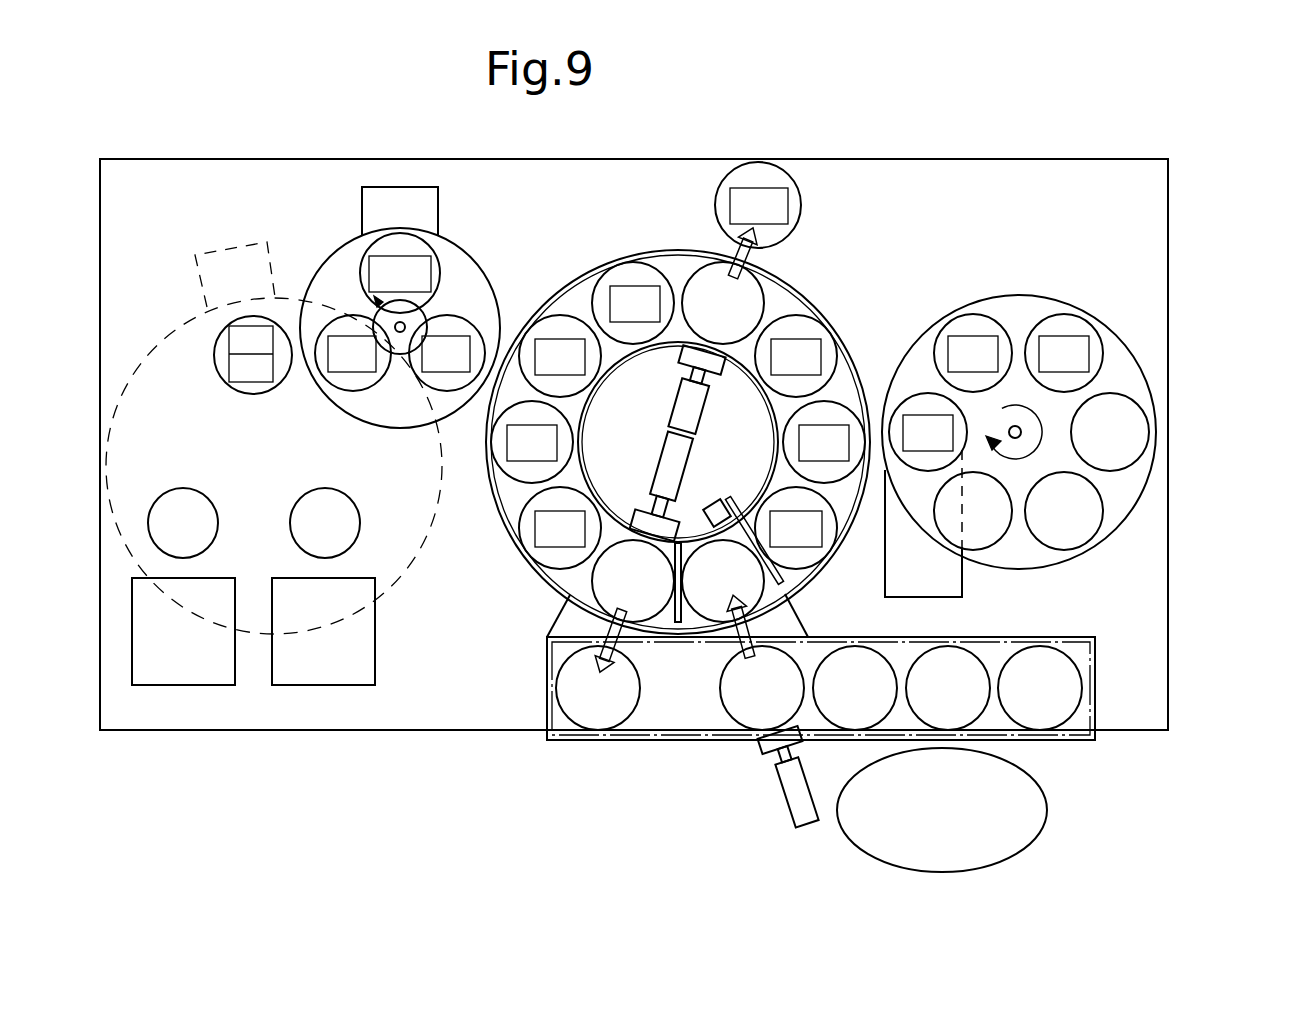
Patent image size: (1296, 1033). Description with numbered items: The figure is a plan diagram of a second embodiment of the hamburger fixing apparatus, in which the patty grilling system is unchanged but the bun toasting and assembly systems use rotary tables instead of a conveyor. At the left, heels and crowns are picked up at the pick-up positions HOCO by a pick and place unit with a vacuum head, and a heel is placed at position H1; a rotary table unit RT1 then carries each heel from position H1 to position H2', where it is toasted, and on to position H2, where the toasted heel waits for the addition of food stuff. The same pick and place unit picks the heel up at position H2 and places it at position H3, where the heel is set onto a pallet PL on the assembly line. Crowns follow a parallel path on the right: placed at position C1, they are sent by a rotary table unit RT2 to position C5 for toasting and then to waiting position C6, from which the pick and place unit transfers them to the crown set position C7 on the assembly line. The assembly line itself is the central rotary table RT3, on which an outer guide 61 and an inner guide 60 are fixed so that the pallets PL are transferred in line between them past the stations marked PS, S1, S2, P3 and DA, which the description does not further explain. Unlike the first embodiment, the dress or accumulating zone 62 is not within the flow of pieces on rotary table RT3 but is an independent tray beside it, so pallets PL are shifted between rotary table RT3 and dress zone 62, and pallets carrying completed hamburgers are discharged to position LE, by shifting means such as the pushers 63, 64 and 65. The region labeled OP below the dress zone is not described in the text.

The rotary table unit RT1 is at (470, 277).
The rotary table unit RT2 is at (1138, 387).
The rotary table RT3 is at (797, 305).
The inner guide 60 is at (585, 473).
The outer guide 61 is at (550, 583).
The dress zone 62 is at (1082, 662).
The pusher 63 is at (653, 477).
The pusher 64 is at (798, 797).
The pusher 65 is at (693, 408).
The pallet PL is at (605, 718).
The operator position OP is at (942, 810).
The discharge position LE is at (758, 221).
The pick-up positions for heels and crowns HOCO is at (253, 355).
The heel placing position H1 is at (353, 353).
The heel waiting position H2 is at (447, 353).
The heel toasting position H2' is at (400, 273).
The heel set position H3 is at (560, 356).
The PS station PS is at (633, 303).
The crown set position C7 is at (796, 356).
The station S1 is at (532, 442).
The station S2 is at (824, 442).
The station P3 is at (560, 528).
The DA station DA is at (796, 528).
The crown toasting position C5 is at (928, 432).
The crown waiting position C6 is at (973, 353).
The crown placing position C1 is at (1064, 353).